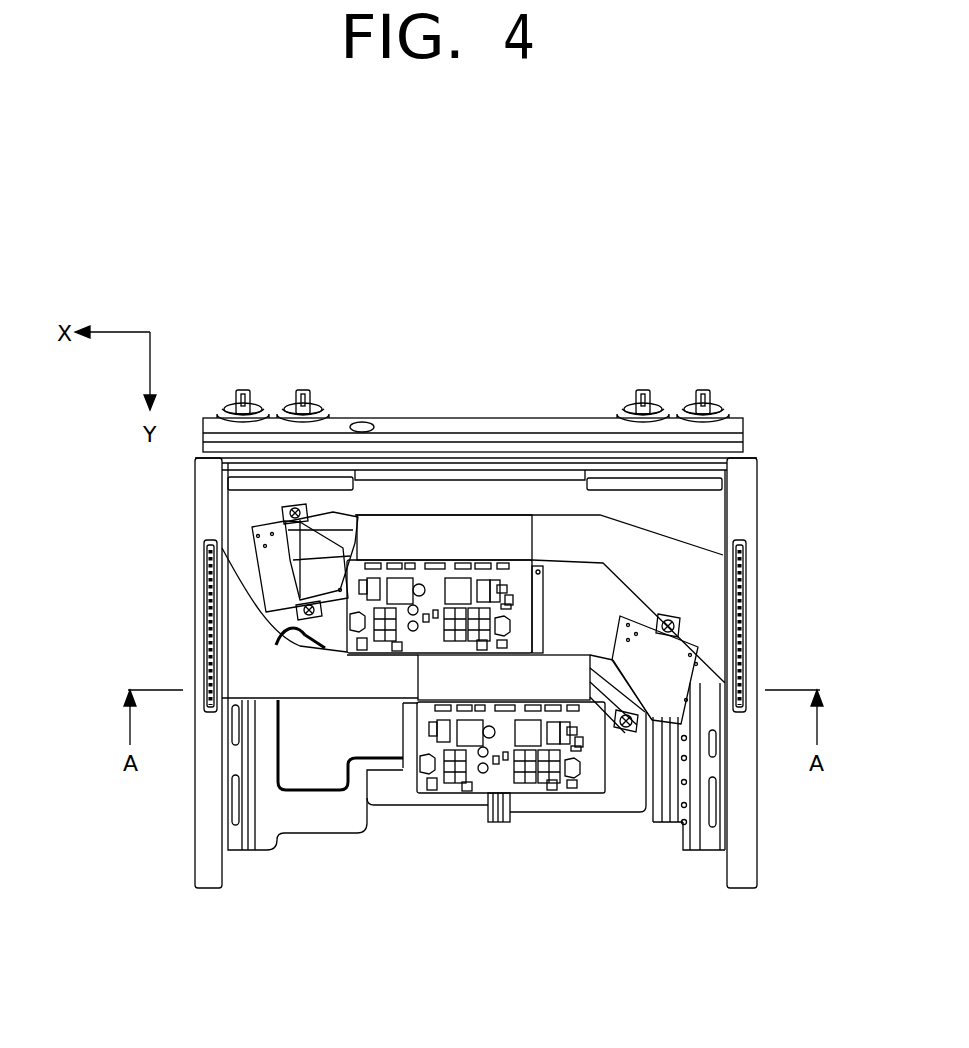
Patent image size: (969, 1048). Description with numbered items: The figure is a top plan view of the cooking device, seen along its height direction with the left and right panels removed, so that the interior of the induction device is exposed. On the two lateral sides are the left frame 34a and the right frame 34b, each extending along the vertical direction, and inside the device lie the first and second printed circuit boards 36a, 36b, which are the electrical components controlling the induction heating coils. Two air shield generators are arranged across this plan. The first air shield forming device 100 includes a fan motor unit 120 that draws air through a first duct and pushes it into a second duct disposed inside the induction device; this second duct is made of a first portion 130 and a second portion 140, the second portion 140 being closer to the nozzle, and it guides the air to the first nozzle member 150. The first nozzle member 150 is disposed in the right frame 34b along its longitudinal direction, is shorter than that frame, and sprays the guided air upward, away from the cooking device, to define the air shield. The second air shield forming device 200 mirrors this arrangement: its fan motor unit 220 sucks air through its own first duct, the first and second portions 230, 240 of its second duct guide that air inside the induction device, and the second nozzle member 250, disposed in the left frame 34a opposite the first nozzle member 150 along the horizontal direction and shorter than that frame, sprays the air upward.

The first air shield forming device 100 is at (388, 724).
The fan motor unit 120 is at (640, 731).
The first portion of the second duct 130 is at (492, 683).
The second portion of the second duct 140 is at (303, 685).
The first nozzle member 150 is at (192, 618).
The second air shield forming device 200 is at (557, 496).
The fan motor unit 220 is at (318, 498).
The first portion of the second duct 230 is at (435, 528).
The second portion of the second duct 240 is at (633, 545).
The second nozzle member 250 is at (760, 592).
The left frame 34a is at (748, 825).
The right frame 34b is at (207, 820).
The first printed circuit board 36a is at (483, 572).
The second printed circuit board 36b is at (572, 785).